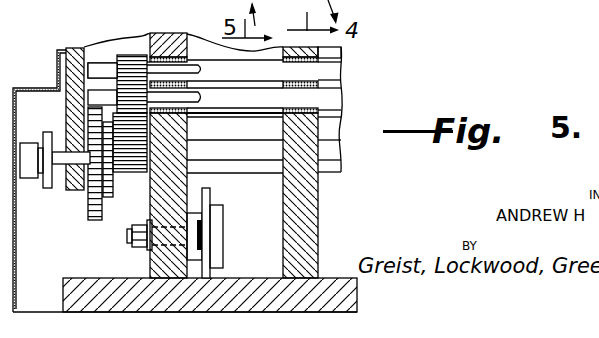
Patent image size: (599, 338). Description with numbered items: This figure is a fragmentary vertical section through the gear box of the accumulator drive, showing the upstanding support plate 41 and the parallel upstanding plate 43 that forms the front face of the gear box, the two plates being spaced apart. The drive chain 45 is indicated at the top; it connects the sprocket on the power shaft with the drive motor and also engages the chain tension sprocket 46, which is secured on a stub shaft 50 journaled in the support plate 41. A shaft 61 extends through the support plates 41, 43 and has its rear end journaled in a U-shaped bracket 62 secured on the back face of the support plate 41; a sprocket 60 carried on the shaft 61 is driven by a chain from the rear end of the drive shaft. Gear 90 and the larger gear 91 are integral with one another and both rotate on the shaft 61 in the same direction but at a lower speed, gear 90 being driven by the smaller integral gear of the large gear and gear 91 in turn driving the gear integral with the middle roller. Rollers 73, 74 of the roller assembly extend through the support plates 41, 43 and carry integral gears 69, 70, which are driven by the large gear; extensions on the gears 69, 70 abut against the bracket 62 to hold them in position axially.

The support plate 41 is at (161, 265).
The upstanding plate 43 is at (318, 212).
The drive chain 45 is at (346, 0).
The chain tension sprocket 46 is at (210, 195).
The stub shaft 50 is at (127, 235).
The sprocket 60 is at (48, 188).
The shaft 61 is at (60, 152).
The U-shaped bracket 62 is at (73, 50).
The gear 69 is at (117, 88).
The gear 70 is at (133, 55).
The roller 73 is at (262, 106).
The roller 74 is at (257, 78).
The gear 90 is at (108, 198).
The large gear 91 is at (96, 212).